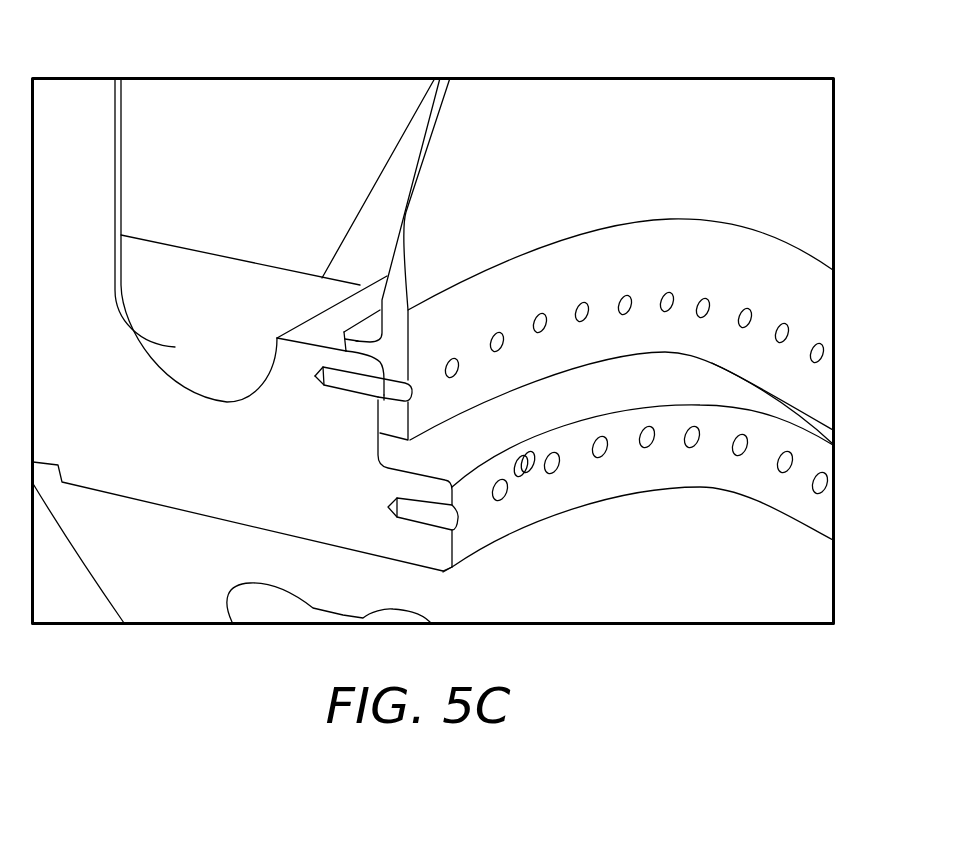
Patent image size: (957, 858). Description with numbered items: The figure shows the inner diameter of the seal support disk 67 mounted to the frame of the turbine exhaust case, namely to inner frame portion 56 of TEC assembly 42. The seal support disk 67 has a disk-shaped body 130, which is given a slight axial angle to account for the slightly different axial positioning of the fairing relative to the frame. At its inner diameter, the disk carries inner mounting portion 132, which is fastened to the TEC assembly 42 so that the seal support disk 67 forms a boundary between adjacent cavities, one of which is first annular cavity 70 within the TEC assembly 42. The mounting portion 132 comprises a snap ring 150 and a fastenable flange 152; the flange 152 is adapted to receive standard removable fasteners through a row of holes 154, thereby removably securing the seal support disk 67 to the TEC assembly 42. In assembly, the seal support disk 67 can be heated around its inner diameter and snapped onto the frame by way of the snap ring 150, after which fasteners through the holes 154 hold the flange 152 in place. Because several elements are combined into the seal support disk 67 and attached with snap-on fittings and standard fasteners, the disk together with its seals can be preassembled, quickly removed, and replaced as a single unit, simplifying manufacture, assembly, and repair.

The TEC assembly 42 is at (122, 149).
The inner frame portion 56 is at (204, 457).
The seal support disk 67 is at (783, 123).
The first annular cavity 70 is at (286, 135).
The body 130 is at (614, 131).
The inner mounting portion 132 is at (845, 311).
The snap ring 150 is at (340, 337).
The fastenable flange 152 is at (509, 362).
The holes 154 is at (542, 313).